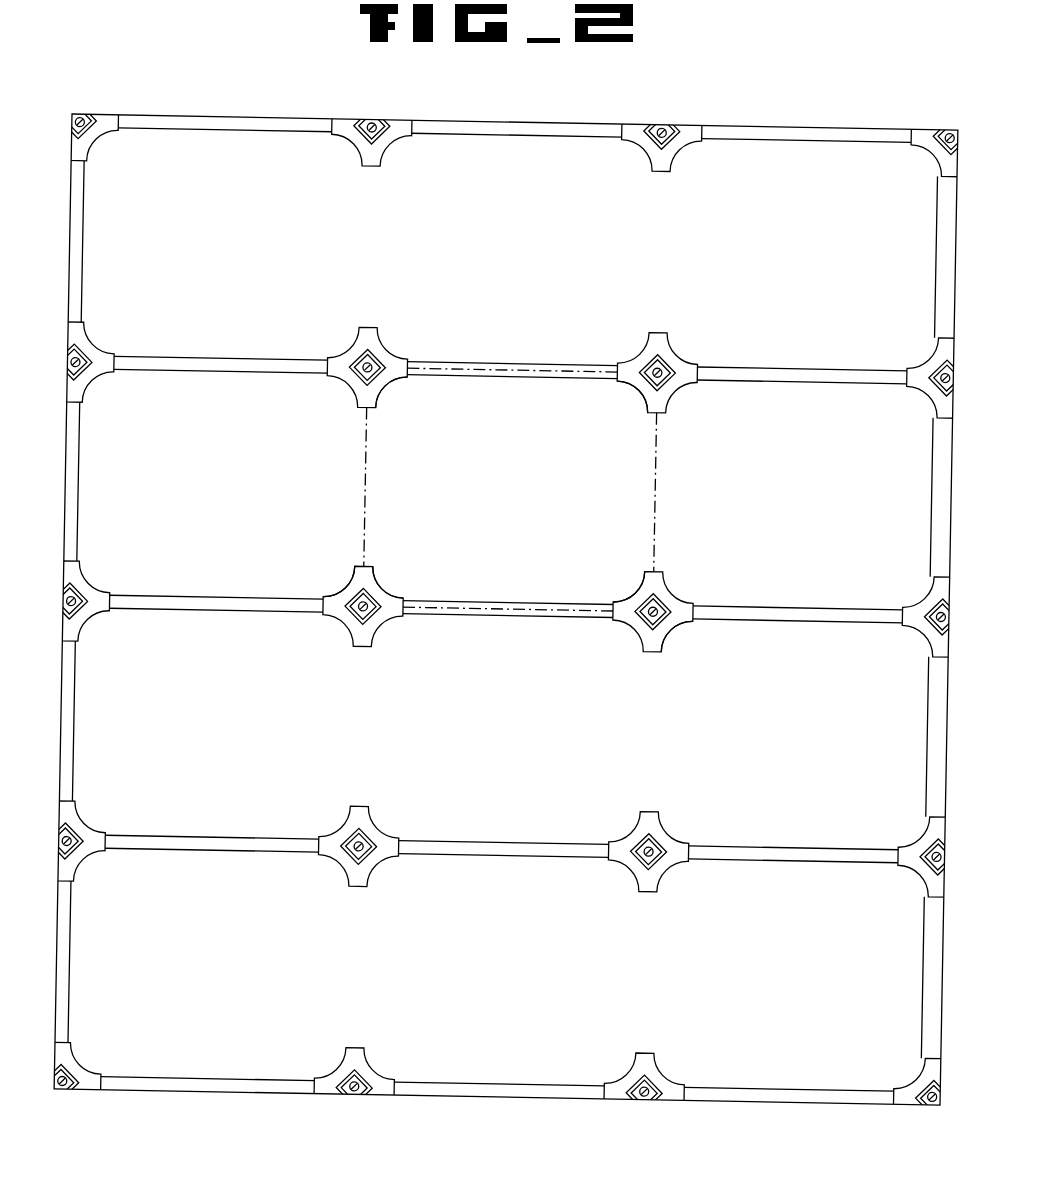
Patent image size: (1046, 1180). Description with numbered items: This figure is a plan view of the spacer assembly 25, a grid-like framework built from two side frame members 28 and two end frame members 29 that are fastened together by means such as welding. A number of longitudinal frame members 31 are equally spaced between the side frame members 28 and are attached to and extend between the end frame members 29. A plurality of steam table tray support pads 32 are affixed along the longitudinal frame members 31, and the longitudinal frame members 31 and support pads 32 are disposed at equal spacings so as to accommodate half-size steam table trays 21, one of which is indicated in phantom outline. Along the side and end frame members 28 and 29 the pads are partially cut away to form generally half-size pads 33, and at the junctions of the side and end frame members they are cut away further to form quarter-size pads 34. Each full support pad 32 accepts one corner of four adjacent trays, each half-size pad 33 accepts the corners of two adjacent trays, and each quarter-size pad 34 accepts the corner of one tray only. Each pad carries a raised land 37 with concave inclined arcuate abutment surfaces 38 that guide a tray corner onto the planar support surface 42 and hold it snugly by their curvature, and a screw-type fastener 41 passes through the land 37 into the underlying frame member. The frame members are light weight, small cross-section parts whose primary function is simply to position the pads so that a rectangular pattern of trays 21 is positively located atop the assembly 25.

The half-size steam table tray 21 is at (656, 512).
The spacer assembly 25 is at (761, 123).
The side frame member 28 is at (500, 118).
The end frame member 29 is at (80, 490).
The longitudinal frame member 31 is at (232, 365).
The steam table tray support pad 32 is at (372, 330).
The half-size pad 33 is at (355, 156).
The quarter-size pad 34 is at (92, 143).
The land 37 is at (372, 356).
The inclined arcuate abutment surface 38 is at (371, 580).
The screw-type fastener 41 is at (370, 118).
The planar support surface 42 is at (382, 382).